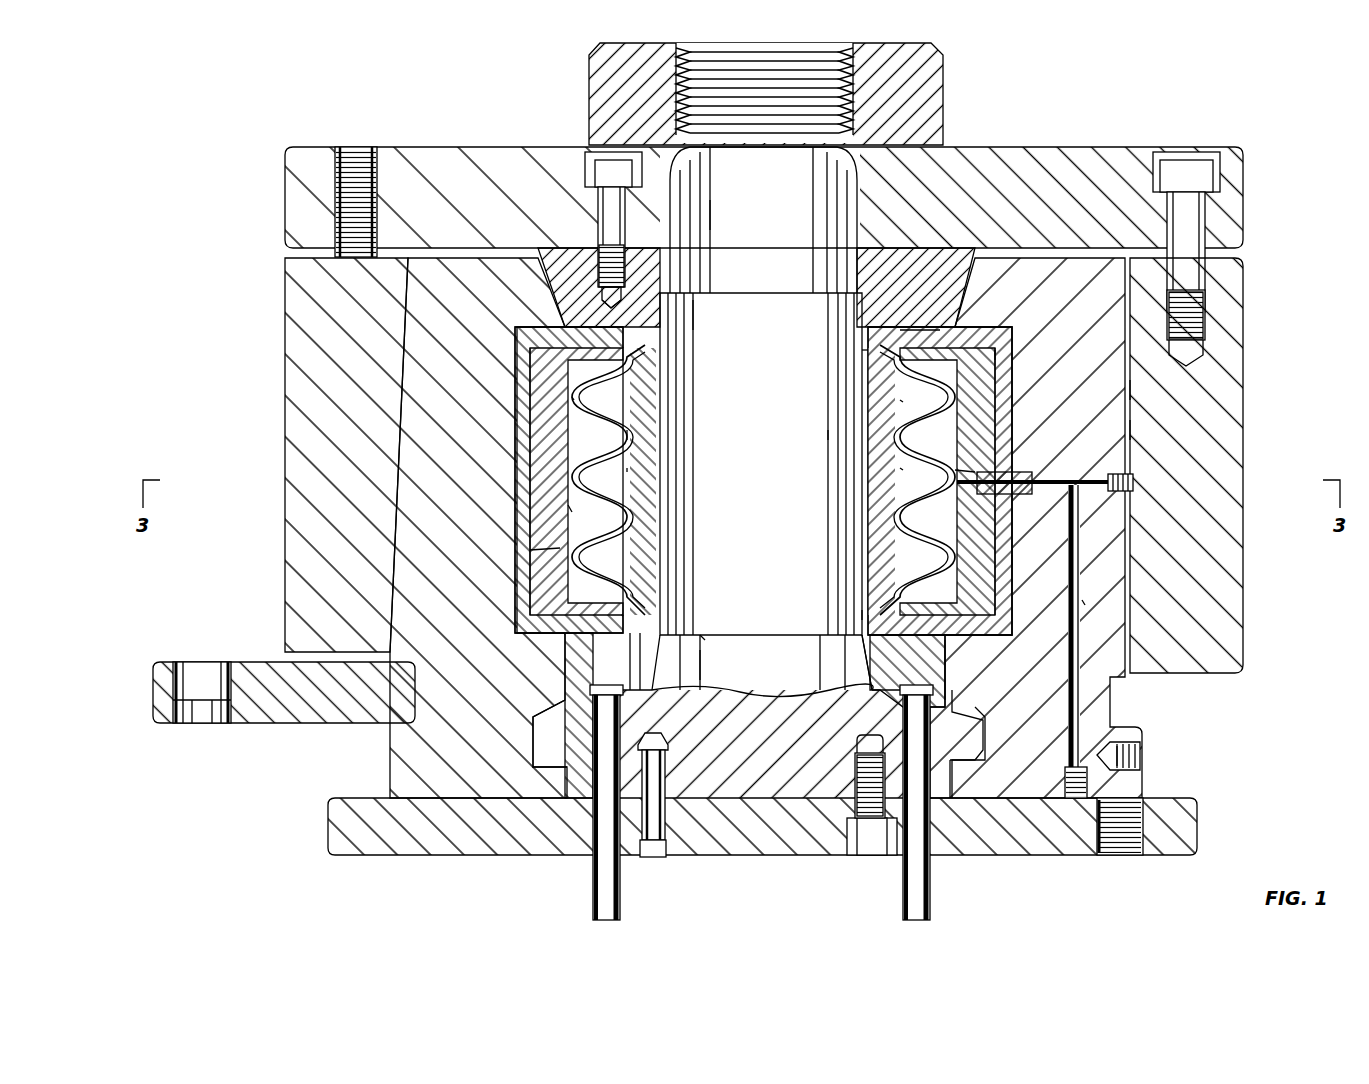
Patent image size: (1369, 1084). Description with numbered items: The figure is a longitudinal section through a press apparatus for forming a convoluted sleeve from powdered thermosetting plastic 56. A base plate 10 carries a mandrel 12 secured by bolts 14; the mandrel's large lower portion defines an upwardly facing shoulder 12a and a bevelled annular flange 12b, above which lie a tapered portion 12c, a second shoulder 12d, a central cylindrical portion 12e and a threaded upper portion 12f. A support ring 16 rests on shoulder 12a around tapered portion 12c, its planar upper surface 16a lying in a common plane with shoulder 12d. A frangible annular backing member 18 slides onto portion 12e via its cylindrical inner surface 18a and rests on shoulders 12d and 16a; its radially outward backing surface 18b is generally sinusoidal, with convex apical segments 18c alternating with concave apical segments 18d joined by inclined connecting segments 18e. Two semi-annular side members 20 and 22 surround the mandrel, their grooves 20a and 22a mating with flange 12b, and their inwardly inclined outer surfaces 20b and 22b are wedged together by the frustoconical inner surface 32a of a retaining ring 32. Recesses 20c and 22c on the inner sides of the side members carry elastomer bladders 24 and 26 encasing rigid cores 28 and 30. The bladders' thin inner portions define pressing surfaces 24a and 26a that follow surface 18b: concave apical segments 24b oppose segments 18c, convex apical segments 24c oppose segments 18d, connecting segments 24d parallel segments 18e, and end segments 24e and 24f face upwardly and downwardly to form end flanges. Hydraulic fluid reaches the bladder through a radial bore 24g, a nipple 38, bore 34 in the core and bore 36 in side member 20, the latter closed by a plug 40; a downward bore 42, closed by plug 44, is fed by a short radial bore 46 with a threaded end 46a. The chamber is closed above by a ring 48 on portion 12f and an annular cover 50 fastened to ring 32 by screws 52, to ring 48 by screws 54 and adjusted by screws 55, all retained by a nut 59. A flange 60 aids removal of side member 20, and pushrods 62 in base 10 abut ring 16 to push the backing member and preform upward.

The base plate 10 is at (1030, 855).
The mandrel 12 is at (748, 790).
The upwardly facing shoulder 12a is at (955, 697).
The bevelled annular flange 12b is at (987, 737).
The tapered portion 12c is at (740, 665).
The upwardly facing shoulder 12d is at (704, 635).
The central cylindrical portion 12e is at (738, 315).
The upper portion 12f is at (746, 215).
The bolts 14 is at (860, 790).
The support ring 16 is at (565, 665).
The planar upper surface 16a is at (870, 616).
The annular backing member 18 is at (645, 405).
The cylindrical inner surface 18a is at (808, 431).
The backing surface 18b is at (1002, 362).
The convex apical segments 18c is at (530, 410).
The concave apical segments 18d is at (655, 434).
The inclined connecting segments 18e is at (641, 395).
The side member 20 is at (1100, 705).
The groove 20a is at (986, 775).
The outer surface 20b is at (1138, 432).
The semi-annular recess 20c is at (1012, 560).
The side member 22 is at (390, 762).
The groove 22a is at (535, 740).
The outer surface 22b is at (398, 425).
The semi-annular recess 22c is at (518, 340).
The annular bladder 24 is at (990, 330).
The pressing surface 24a is at (868, 352).
The concave apical segments 24b is at (1003, 420).
The convex apical segments 24c is at (870, 468).
The connecting segments 24d is at (870, 400).
The end segment 24e is at (945, 330).
The end segment 24f is at (950, 648).
The radial bore 24g is at (1020, 476).
The annular bladder 26 is at (530, 450).
The pressing surface 26a is at (650, 520).
The core member 28 is at (1010, 400).
The core member 30 is at (530, 550).
The retaining ring 32 is at (1225, 468).
The frustoconical inner surface 32a is at (1130, 392).
The bore 34 is at (956, 470).
The bore 36 is at (1088, 503).
The nipple 38 is at (1022, 496).
The plug 40 is at (1133, 482).
The bore 42 is at (1085, 600).
The plug 44 is at (1076, 800).
The short radial bore 46 is at (1140, 767).
The enlarged threaded outer end 46a is at (1140, 752).
The ring 48 is at (878, 265).
The annular cover 50 is at (530, 160).
The screw 52 is at (1200, 290).
The screw 54 is at (585, 165).
The screw 55 is at (340, 190).
The powdered thermosetting plastic 56 is at (616, 322).
The nut 59 is at (935, 80).
The flange 60 is at (262, 723).
The pushrods 62 is at (590, 892).